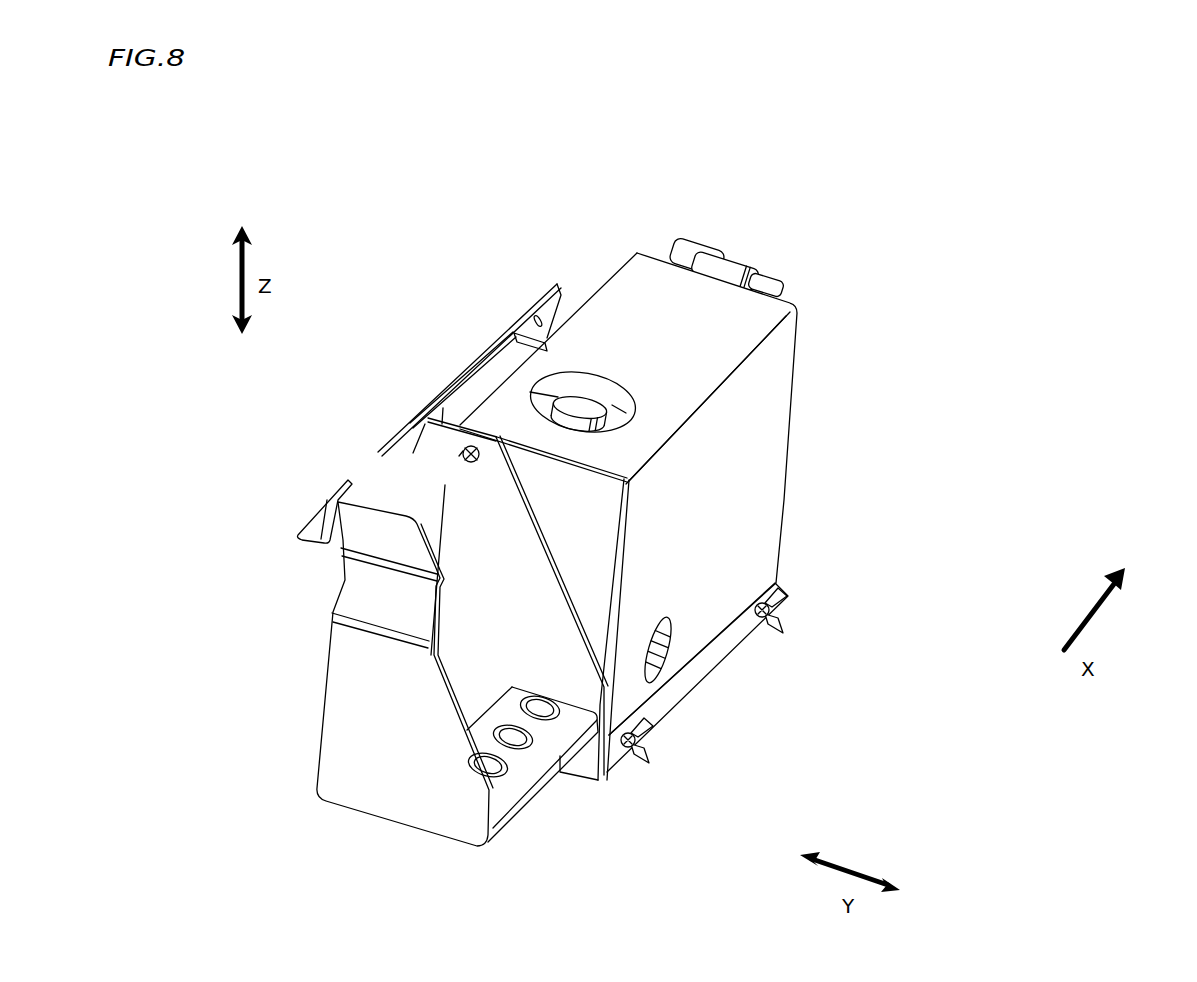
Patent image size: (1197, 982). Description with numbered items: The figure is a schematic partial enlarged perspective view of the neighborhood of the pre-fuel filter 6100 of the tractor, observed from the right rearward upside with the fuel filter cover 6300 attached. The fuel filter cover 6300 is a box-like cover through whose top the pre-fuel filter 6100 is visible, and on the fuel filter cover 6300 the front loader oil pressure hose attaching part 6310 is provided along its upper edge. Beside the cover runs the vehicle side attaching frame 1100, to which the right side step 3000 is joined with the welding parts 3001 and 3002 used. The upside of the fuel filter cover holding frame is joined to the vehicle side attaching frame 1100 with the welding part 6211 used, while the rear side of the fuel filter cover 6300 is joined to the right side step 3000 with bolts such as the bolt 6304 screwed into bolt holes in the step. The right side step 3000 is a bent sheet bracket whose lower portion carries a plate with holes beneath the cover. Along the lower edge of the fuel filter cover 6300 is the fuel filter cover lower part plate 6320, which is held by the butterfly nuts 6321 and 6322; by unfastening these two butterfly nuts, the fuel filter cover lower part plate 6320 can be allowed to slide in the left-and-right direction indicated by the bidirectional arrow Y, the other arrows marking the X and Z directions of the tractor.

The vehicle side attaching frame 1100 is at (557, 282).
The right side step 3000 is at (400, 823).
The welding part 3001 is at (422, 426).
The welding part 3002 is at (323, 503).
The pre-fuel filter 6100 is at (663, 345).
The welding part 6211 is at (502, 339).
The fuel filter cover 6300 is at (792, 417).
The bolt 6304 is at (462, 459).
The front loader oil pressure hose attaching part 6310 is at (712, 240).
The fuel filter cover lower part plate 6320 is at (710, 680).
The butterfly nut 6321 is at (780, 608).
The butterfly nut 6322 is at (643, 747).